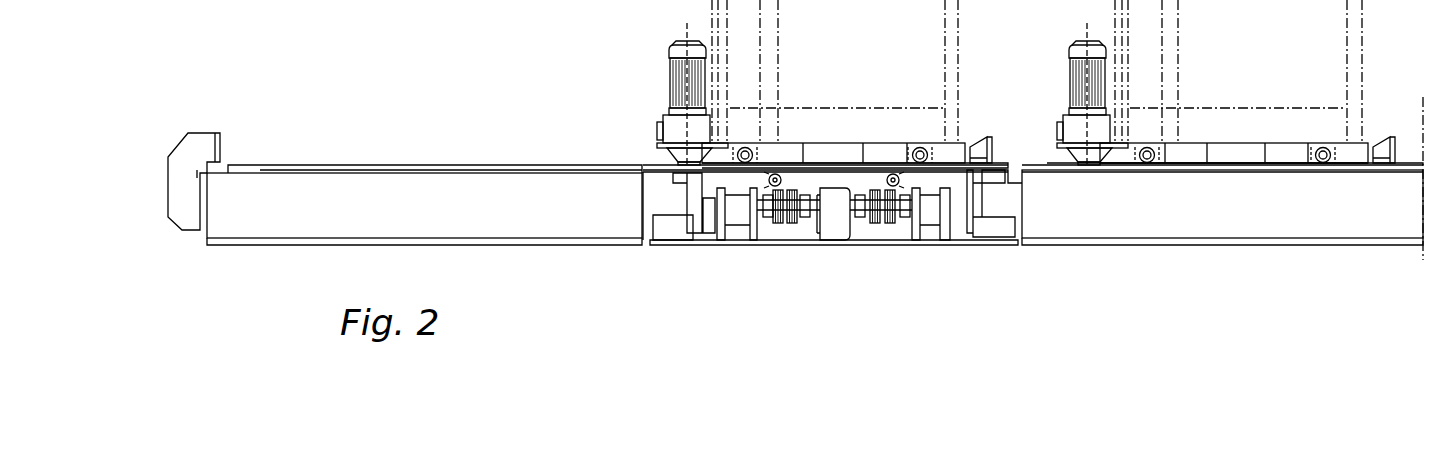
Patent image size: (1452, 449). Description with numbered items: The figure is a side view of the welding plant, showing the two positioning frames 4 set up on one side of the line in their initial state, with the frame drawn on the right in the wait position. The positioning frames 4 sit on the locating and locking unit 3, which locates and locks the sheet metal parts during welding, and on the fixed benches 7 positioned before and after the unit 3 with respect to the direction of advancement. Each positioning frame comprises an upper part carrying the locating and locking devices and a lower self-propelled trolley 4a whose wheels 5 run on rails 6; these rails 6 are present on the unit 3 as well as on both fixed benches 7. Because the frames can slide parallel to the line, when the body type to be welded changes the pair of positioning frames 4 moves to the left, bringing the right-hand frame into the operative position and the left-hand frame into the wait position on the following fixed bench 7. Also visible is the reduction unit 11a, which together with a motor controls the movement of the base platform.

The locating and locking unit 3 is at (652, 132).
The positioning frame 4 is at (1117, 20).
The lower self-propelled trolley 4a is at (878, 140).
The wheels 5 is at (770, 152).
The rails 6 is at (347, 168).
The fixed bench 7 is at (502, 238).
The reduction unit 11a is at (831, 222).